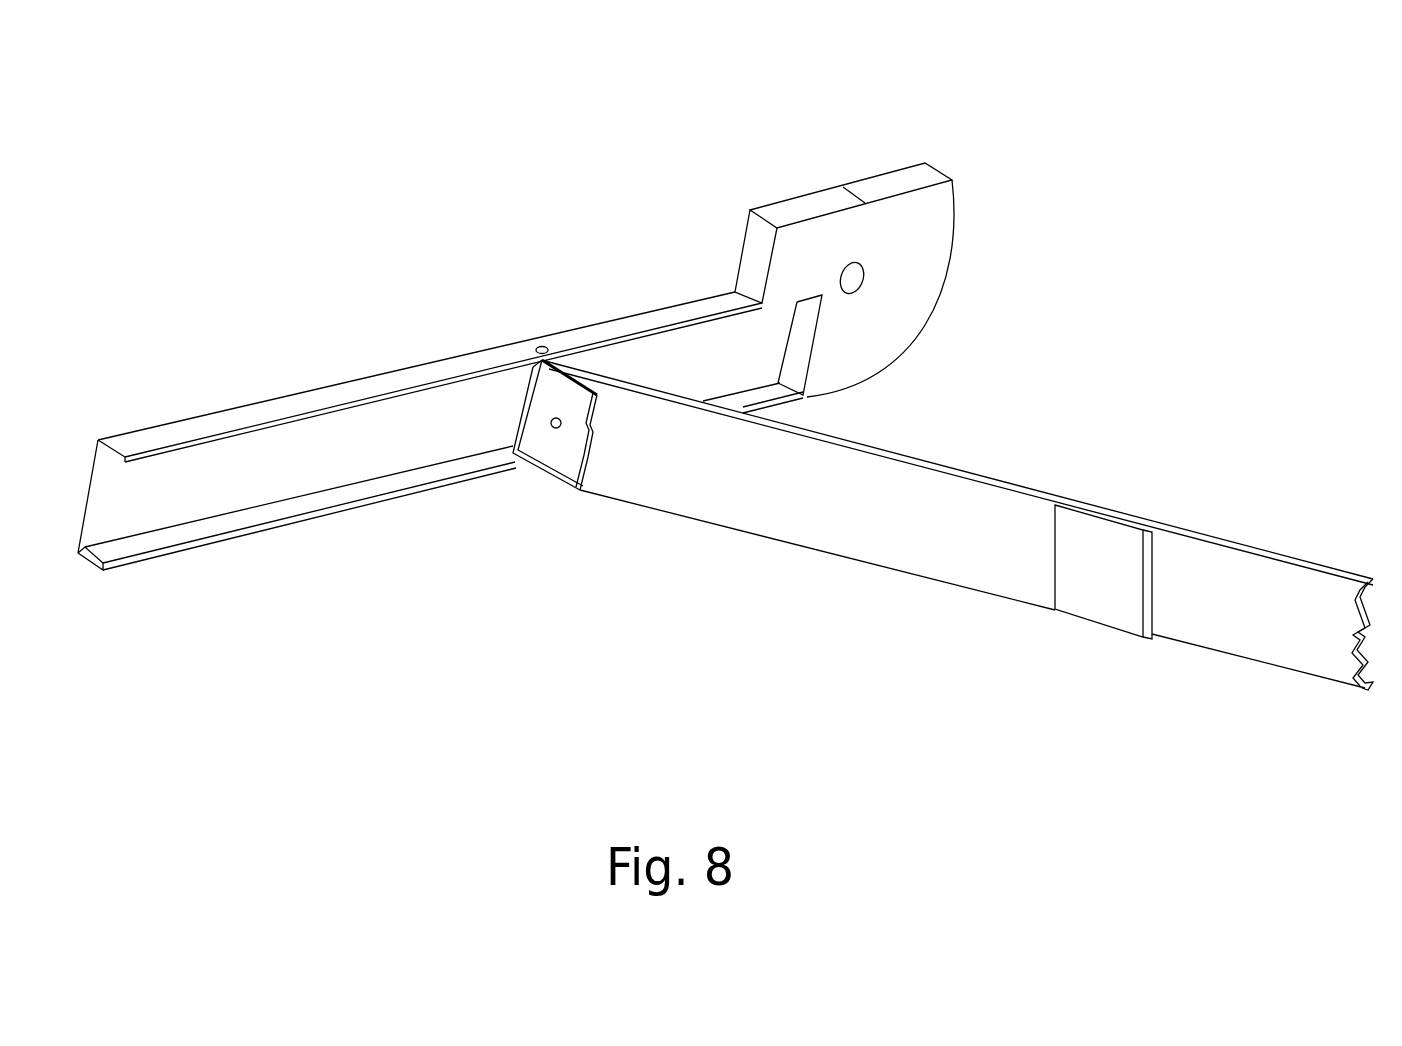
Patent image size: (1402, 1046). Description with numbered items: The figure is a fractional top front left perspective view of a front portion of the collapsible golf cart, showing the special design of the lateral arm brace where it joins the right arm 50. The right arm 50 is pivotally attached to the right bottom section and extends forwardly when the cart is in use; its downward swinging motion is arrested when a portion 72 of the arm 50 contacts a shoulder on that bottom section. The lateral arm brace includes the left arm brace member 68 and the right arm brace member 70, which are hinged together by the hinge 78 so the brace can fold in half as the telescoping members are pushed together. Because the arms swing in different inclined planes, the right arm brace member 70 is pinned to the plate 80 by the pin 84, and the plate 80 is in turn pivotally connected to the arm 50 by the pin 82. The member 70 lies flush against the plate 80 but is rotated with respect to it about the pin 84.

The right arm 50 is at (328, 388).
The left arm brace member 68 is at (1242, 613).
The right arm brace member 70 is at (872, 518).
The portion of the arm 72 is at (893, 185).
The hinge 78 is at (1098, 587).
The plate 80 is at (558, 467).
The pin 82 is at (545, 345).
The pin 84 is at (562, 430).